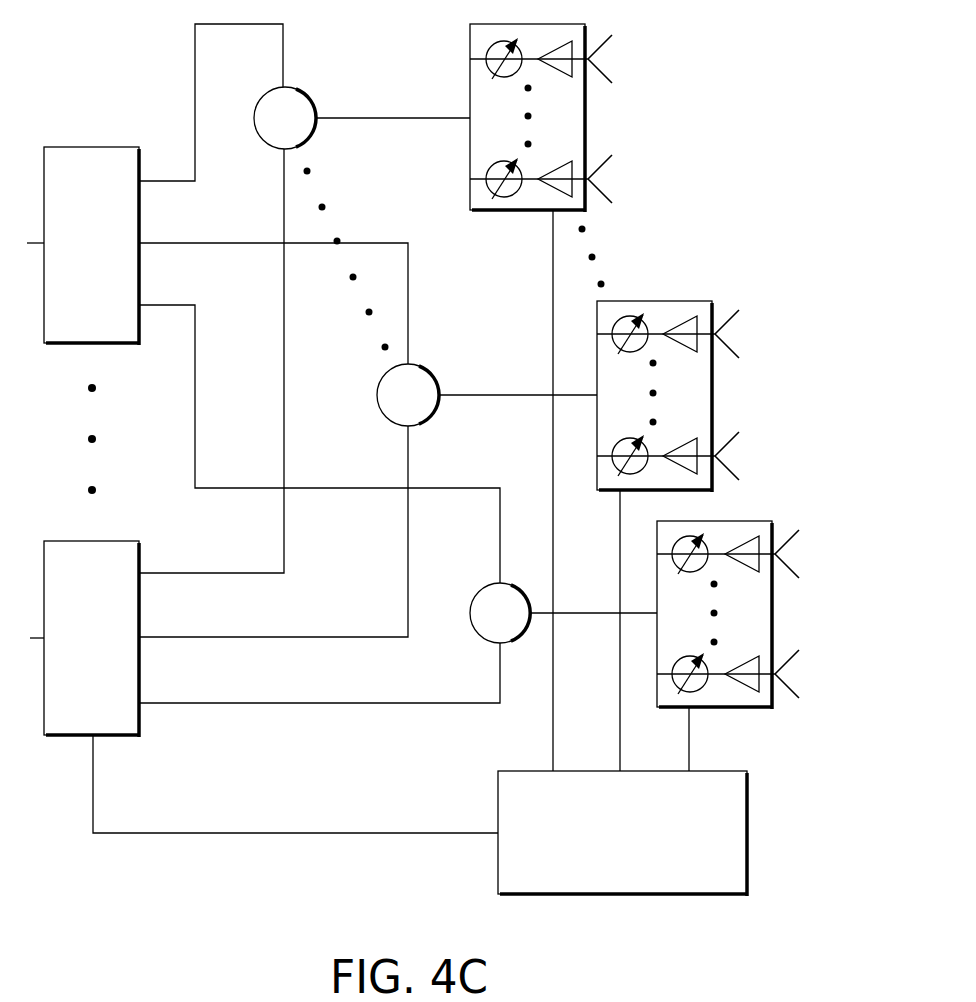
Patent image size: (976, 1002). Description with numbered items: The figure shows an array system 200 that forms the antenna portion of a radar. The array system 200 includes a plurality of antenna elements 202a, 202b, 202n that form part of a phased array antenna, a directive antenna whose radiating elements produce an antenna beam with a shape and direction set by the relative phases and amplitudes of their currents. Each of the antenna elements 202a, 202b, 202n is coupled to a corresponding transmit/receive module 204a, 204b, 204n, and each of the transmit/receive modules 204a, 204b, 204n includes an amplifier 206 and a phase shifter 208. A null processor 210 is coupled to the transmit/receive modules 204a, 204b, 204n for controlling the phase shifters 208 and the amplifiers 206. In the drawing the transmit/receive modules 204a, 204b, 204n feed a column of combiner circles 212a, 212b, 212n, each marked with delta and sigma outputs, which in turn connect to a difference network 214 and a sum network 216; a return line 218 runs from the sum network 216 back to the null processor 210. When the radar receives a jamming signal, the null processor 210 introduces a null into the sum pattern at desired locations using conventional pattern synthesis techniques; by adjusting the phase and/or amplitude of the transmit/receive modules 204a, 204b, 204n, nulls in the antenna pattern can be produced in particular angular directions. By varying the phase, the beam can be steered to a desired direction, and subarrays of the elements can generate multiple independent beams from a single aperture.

The array system 200 is at (103, 55).
The antenna element 202n is at (602, 47).
The antenna element 202b is at (797, 536).
The antenna element 202a is at (797, 655).
The transmit/receive module 204n is at (517, 212).
The transmit/receive module 204b is at (655, 301).
The transmit/receive module 204a is at (733, 708).
The amplifier 206 is at (672, 570).
The phase shifter 208 is at (748, 568).
The null processor 210 is at (498, 803).
The sum/difference combiner 212n is at (317, 97).
The sum/difference combiner 212b is at (432, 378).
The sum/difference combiner 212a is at (478, 594).
The difference (delta) network 214 is at (120, 344).
The sum (sigma) network 216 is at (120, 736).
The feedback line 218 is at (325, 832).